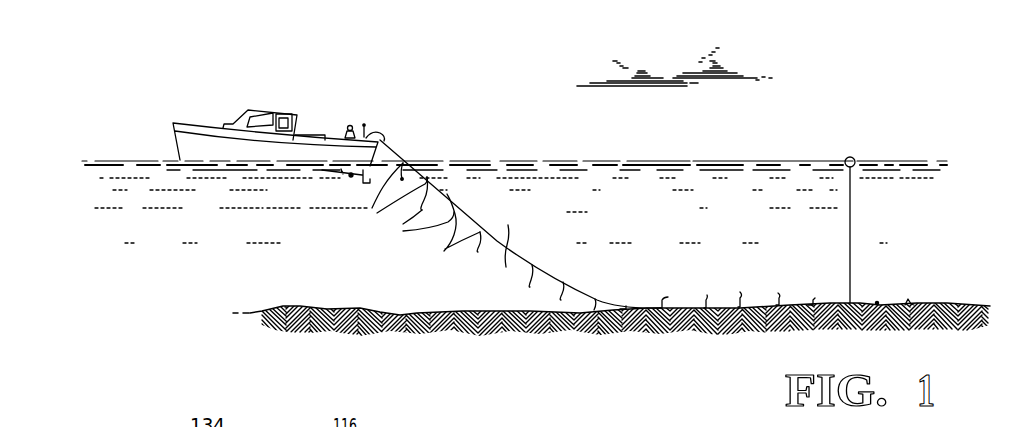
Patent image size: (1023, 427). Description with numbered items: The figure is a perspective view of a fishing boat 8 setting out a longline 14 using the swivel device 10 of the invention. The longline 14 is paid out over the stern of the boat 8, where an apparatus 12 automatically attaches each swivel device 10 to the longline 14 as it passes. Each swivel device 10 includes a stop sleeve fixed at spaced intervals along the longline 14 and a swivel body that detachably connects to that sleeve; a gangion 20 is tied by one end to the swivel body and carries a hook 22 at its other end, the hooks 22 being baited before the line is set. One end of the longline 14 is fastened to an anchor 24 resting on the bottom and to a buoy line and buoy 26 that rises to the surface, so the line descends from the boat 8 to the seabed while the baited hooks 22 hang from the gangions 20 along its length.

The boat 8 is at (188, 135).
The swivel device 10 is at (403, 163).
The apparatus 12 is at (371, 131).
The longline 14 is at (447, 194).
The gangion 20 is at (415, 213).
The hook 22 is at (415, 226).
The anchor 24 is at (895, 304).
The buoy line and buoy 26 is at (851, 232).